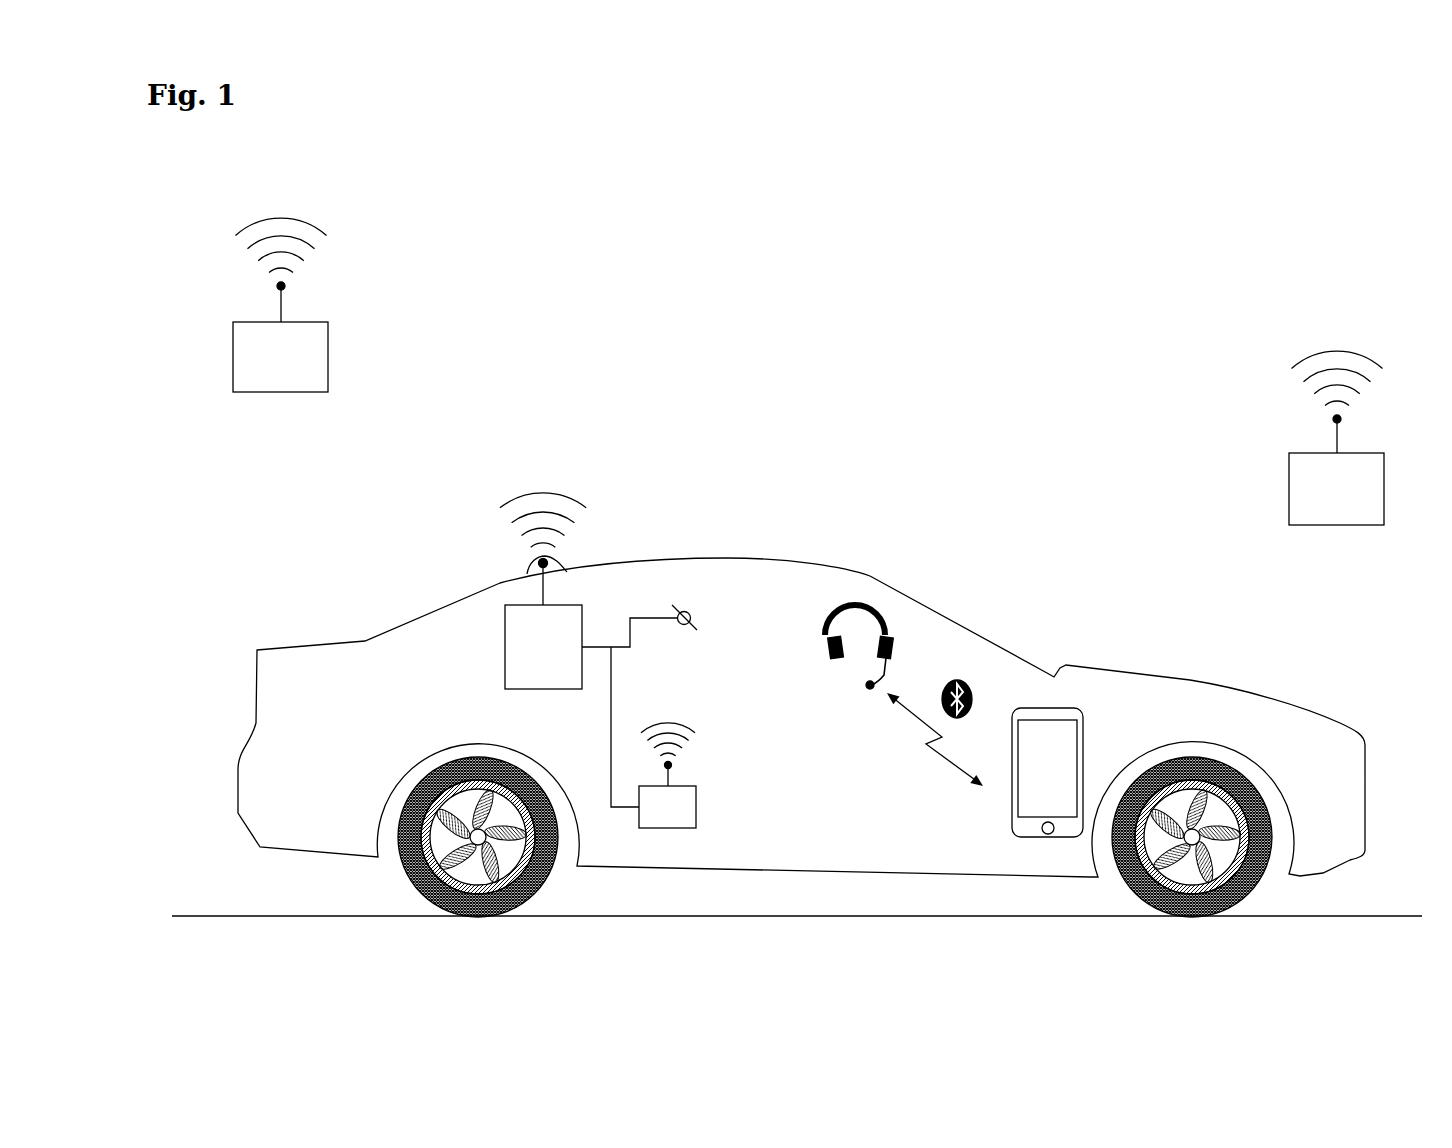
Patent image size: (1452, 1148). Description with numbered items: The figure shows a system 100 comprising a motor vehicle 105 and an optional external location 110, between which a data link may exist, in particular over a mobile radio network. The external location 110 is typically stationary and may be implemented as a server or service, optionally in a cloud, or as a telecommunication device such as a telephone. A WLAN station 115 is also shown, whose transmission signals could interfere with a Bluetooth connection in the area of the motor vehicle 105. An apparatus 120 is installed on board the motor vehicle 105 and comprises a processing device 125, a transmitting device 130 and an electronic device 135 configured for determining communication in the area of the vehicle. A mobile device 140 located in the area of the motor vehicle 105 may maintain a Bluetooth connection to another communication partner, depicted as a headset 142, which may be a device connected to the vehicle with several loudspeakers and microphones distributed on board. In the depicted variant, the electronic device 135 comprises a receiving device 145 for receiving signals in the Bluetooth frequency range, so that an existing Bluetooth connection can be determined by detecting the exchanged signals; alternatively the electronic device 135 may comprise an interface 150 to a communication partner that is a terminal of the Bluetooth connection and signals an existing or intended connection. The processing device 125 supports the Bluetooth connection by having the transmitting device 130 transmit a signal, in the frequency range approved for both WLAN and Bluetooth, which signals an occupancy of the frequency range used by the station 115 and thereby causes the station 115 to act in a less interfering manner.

The system 100 is at (1288, 222).
The motor vehicle 105 is at (330, 642).
The external location 110 is at (328, 357).
The station 115 is at (1289, 490).
The apparatus 120 is at (466, 607).
The processing device 125 is at (543, 626).
The transmitting device 130 is at (545, 560).
The electronic device 135 is at (682, 576).
The mobile device 140 is at (1038, 708).
The headset 142 is at (860, 596).
The receiving device 145 is at (696, 807).
The interface 150 is at (691, 618).